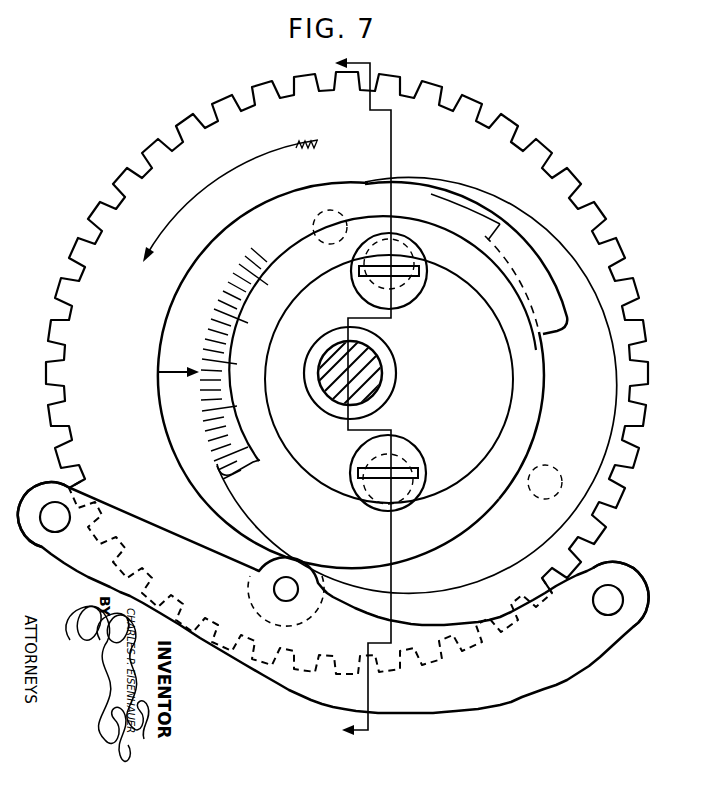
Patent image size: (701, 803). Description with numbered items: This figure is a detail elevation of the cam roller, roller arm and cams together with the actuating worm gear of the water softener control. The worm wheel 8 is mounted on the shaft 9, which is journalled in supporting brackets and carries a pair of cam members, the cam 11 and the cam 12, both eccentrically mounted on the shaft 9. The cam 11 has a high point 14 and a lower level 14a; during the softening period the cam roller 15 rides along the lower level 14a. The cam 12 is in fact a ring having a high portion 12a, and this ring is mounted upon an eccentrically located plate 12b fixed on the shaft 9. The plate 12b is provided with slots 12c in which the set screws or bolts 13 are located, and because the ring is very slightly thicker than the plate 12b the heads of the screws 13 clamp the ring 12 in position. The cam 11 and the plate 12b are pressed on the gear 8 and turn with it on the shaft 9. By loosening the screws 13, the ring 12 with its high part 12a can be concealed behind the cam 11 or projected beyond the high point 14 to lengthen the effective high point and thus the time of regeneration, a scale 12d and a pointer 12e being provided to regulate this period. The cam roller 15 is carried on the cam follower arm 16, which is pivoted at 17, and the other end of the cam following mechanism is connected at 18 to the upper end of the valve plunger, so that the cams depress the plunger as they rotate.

The worm wheel 8 is at (527, 114).
The shaft 9 is at (369, 357).
The cam member 11 is at (197, 493).
The cam ring 12 is at (279, 485).
The high portion of ring 12a is at (558, 292).
The eccentrically located plate 12b is at (536, 401).
The slots 12c is at (363, 258).
The scale 12d is at (211, 308).
The pointer 12e is at (174, 374).
The set screws 13 is at (408, 251).
The high point of cam 14 is at (483, 202).
The lower level of cam 14a is at (189, 264).
The cam roller 15 is at (321, 578).
The cam follower arm 16 is at (493, 693).
The pivot 17 is at (624, 599).
The connection to plunger 18 is at (51, 505).